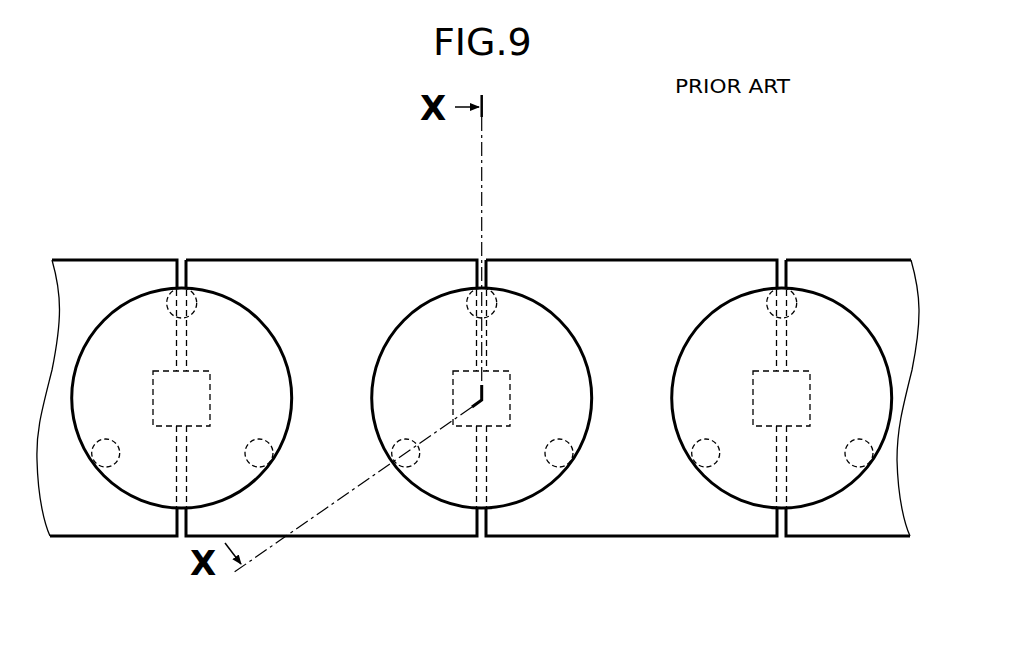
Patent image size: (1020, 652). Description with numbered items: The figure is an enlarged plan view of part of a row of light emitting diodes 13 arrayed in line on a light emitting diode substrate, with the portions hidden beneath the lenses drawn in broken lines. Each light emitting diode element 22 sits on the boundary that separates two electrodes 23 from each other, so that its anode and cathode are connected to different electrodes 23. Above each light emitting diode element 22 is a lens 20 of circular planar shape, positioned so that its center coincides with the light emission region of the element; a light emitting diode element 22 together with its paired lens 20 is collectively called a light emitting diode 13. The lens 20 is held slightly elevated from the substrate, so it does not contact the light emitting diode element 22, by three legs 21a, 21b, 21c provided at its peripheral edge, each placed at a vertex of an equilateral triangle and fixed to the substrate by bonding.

The light emitting diode 13 is at (595, 193).
The lens 20 is at (558, 315).
The leg 21a is at (467, 308).
The leg 21b is at (418, 452).
The leg 21c is at (548, 460).
The light emitting diode element 22 is at (500, 370).
The electrode 23 is at (348, 537).